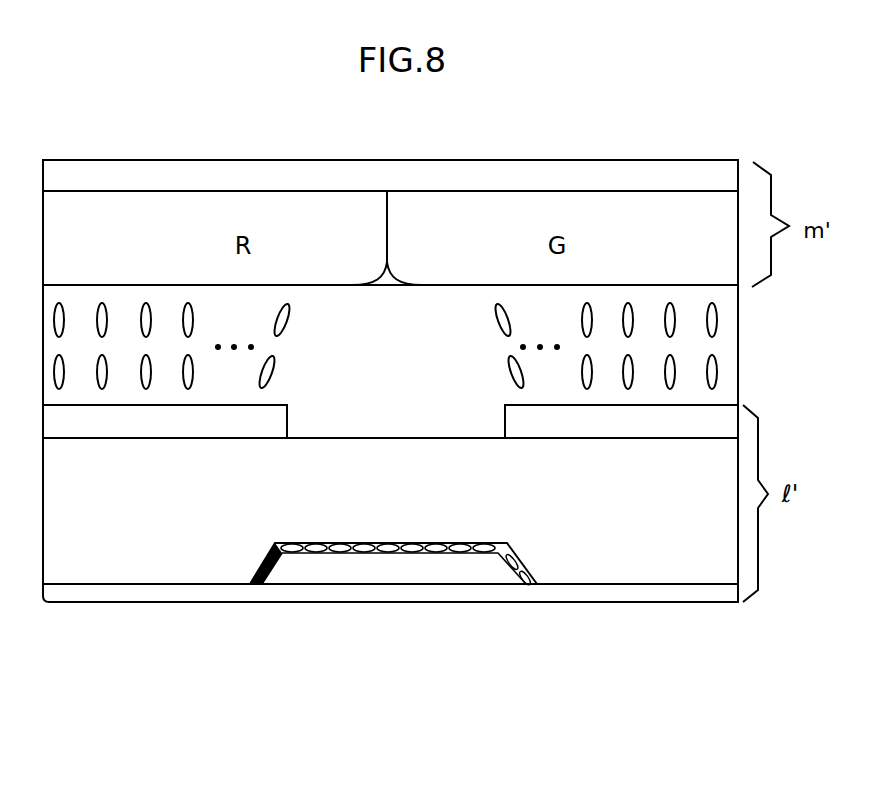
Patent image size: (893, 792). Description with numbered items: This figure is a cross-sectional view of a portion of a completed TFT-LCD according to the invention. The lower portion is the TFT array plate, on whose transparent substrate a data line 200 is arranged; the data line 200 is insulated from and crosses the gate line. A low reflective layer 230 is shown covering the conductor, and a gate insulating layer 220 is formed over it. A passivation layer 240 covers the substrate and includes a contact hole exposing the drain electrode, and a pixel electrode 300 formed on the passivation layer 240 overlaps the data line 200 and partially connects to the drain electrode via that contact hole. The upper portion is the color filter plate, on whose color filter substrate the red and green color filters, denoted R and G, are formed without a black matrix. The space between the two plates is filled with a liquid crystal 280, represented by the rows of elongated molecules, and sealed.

The liquid crystal 280 is at (60, 302).
The pixel electrode 300 is at (642, 418).
The passivation layer 240 is at (581, 532).
The gate insulating layer 220 is at (668, 588).
The data line 200 is at (385, 568).
The low reflective layer 230 is at (447, 552).